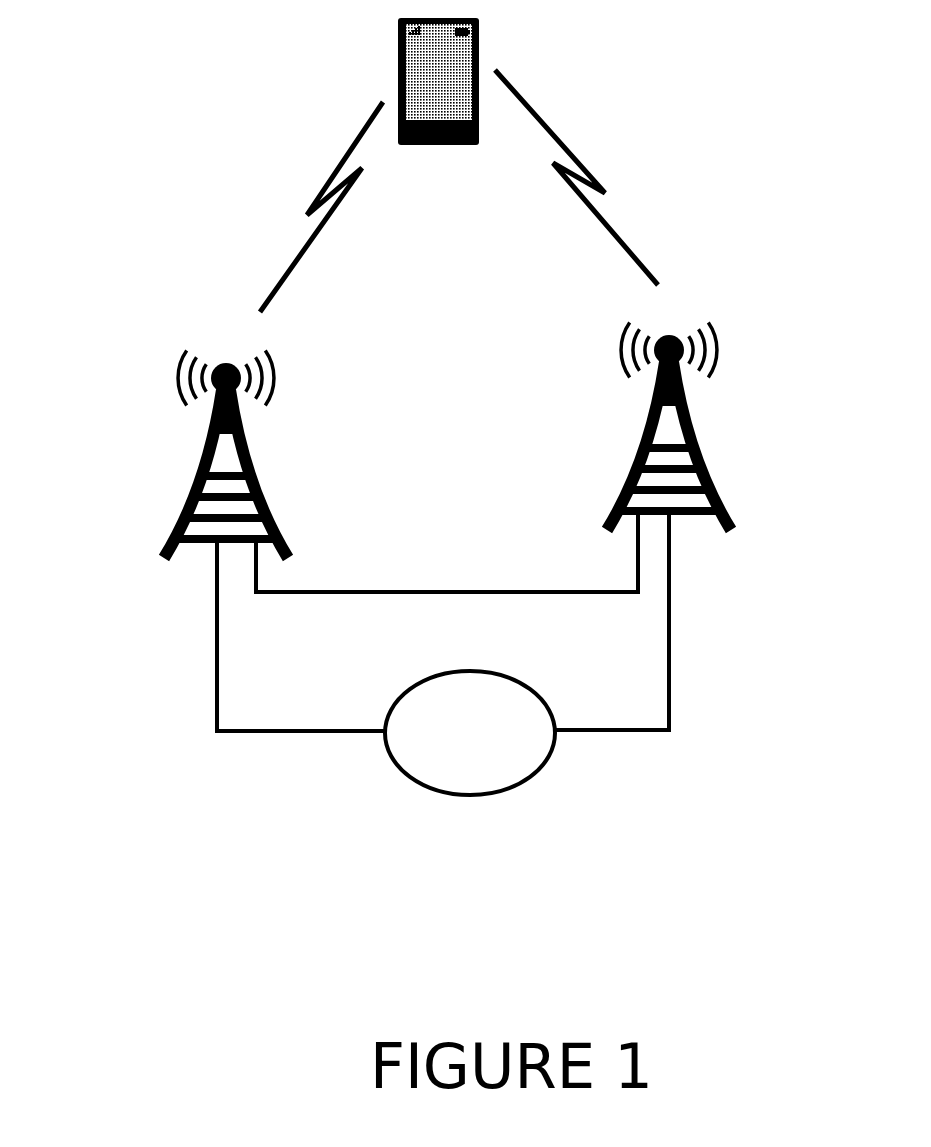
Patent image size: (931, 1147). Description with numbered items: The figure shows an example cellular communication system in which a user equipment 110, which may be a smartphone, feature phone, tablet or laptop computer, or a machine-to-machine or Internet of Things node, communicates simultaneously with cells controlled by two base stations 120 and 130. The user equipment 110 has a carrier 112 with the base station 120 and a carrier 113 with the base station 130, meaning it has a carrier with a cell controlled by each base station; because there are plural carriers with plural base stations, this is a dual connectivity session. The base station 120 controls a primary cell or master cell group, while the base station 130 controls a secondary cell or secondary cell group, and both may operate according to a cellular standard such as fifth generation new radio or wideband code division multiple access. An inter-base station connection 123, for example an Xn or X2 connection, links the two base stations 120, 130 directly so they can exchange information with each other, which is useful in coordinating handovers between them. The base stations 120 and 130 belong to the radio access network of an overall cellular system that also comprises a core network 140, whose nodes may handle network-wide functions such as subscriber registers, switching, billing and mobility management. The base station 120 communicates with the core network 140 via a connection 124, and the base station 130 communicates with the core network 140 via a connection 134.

The user equipment 110 is at (453, 145).
The carrier 112 is at (320, 198).
The carrier 113 is at (593, 178).
The base station 120 is at (187, 507).
The base station 130 is at (715, 483).
The inter-base station connection 123 is at (440, 590).
The connection 124 is at (217, 707).
The connection 134 is at (672, 700).
The core network 140 is at (495, 756).